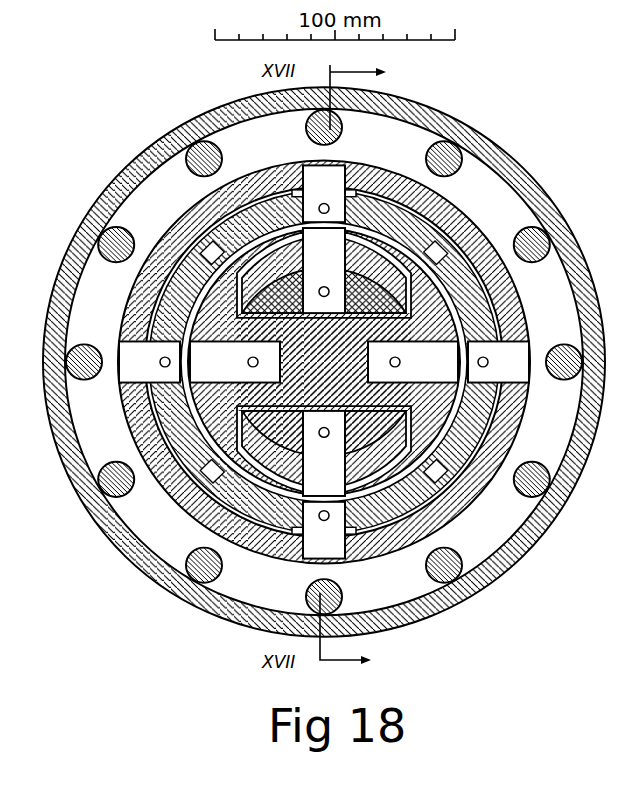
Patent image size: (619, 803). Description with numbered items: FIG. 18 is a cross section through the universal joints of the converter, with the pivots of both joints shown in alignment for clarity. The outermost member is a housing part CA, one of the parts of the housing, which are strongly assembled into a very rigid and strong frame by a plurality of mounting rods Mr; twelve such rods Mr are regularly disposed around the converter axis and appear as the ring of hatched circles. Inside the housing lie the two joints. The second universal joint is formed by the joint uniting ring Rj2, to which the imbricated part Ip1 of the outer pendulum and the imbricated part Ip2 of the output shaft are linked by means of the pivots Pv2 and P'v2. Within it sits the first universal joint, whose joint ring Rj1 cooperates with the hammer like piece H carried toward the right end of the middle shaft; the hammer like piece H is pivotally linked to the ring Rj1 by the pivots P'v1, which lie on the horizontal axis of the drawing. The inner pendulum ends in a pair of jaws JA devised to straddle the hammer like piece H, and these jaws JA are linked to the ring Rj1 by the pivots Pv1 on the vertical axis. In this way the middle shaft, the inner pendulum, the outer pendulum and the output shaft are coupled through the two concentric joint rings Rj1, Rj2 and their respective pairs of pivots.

The housing part CA is at (122, 183).
The mounting rod Mr is at (458, 146).
The joint uniting ring Rj2 is at (287, 181).
The joint ring Rj1 is at (153, 333).
The imbricated part Ip1 is at (190, 458).
The imbricated part Ip2 is at (358, 193).
The jaws JA is at (415, 290).
The hammer like piece H is at (314, 362).
The pivot Pv2 is at (312, 193).
The pivot Pv1 is at (312, 266).
The pivot P'v2 is at (324, 361).
The pivot P'v1 is at (324, 361).